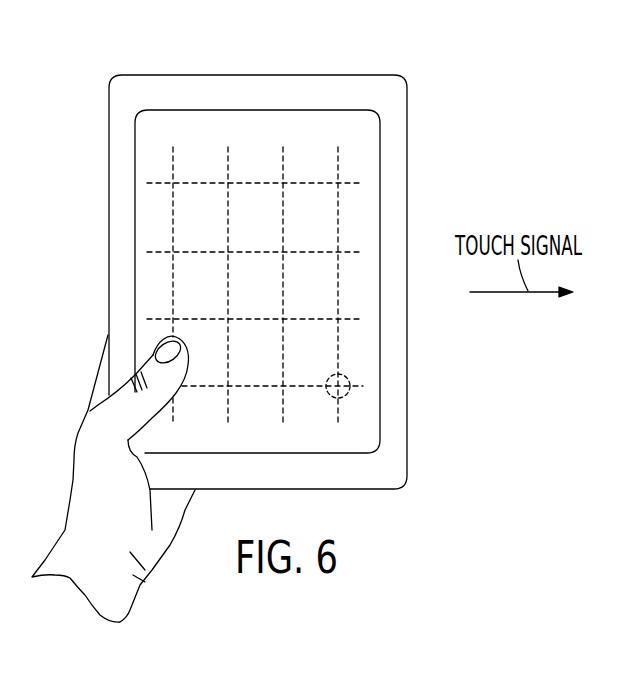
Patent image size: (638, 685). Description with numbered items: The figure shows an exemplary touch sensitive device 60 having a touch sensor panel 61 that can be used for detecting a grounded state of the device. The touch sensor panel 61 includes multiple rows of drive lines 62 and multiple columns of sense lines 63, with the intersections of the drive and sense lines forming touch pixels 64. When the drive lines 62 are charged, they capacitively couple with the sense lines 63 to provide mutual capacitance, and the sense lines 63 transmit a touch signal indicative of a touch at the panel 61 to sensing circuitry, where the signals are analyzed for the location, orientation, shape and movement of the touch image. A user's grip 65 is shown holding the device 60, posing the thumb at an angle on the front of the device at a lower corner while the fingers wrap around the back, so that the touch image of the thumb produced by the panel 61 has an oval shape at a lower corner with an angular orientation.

The touch sensitive device 60 is at (373, 75).
The touch sensor panel 61 is at (380, 157).
The drive lines 62 is at (147, 183).
The sense lines 63 is at (176, 165).
The touch pixels 64 is at (347, 395).
The user's grip 65 is at (72, 486).